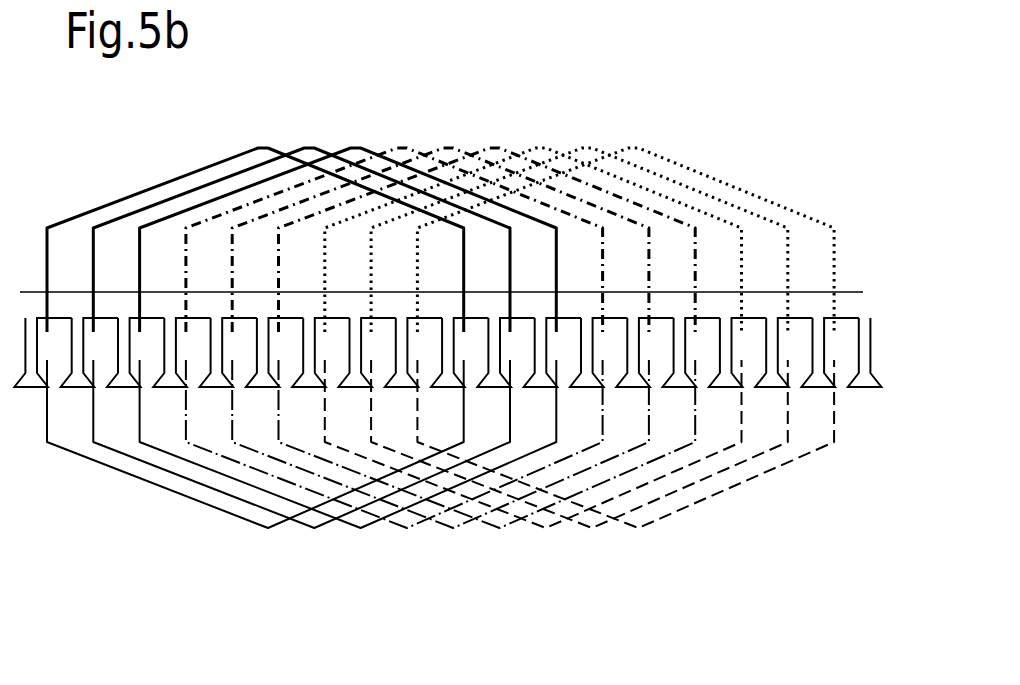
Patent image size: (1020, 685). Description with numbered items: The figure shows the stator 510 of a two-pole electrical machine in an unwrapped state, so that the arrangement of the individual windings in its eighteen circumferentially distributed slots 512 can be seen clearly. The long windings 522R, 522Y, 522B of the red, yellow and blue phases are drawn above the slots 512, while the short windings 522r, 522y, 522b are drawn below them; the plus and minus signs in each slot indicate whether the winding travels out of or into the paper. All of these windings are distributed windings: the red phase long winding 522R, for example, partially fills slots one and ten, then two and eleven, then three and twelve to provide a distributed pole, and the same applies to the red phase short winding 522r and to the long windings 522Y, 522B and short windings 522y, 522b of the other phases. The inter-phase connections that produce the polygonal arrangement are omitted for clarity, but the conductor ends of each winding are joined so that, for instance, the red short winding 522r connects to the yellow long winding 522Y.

The stator 510 is at (706, 134).
The slots 512 is at (847, 352).
The red phase long winding 522R is at (168, 184).
The yellow phase long winding 522Y is at (488, 165).
The blue phase long winding 522B is at (768, 208).
The red phase short winding 522r is at (163, 488).
The yellow phase short winding 522y is at (513, 522).
The blue phase short winding 522b is at (703, 488).